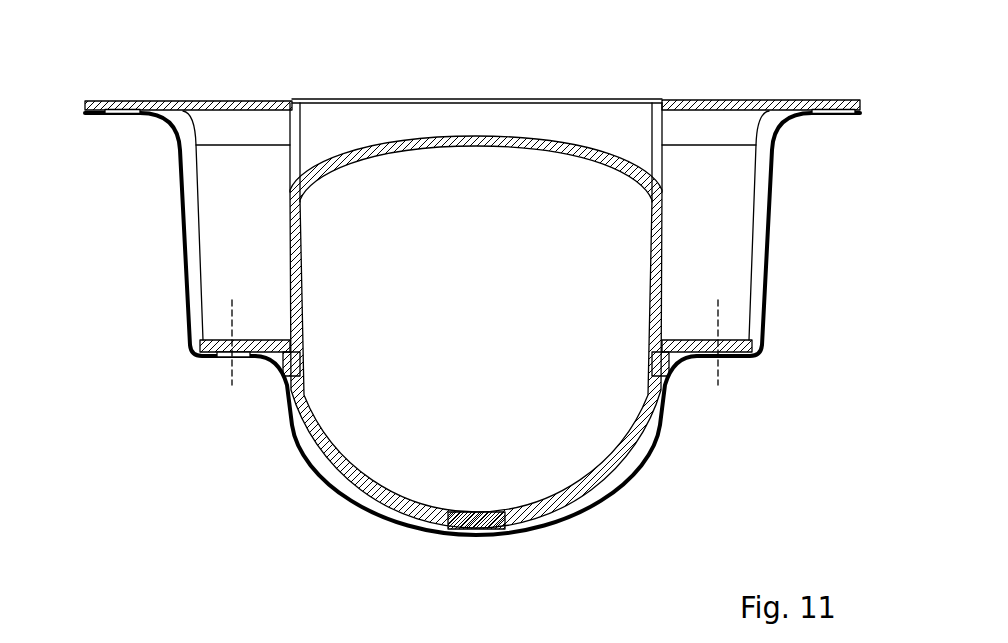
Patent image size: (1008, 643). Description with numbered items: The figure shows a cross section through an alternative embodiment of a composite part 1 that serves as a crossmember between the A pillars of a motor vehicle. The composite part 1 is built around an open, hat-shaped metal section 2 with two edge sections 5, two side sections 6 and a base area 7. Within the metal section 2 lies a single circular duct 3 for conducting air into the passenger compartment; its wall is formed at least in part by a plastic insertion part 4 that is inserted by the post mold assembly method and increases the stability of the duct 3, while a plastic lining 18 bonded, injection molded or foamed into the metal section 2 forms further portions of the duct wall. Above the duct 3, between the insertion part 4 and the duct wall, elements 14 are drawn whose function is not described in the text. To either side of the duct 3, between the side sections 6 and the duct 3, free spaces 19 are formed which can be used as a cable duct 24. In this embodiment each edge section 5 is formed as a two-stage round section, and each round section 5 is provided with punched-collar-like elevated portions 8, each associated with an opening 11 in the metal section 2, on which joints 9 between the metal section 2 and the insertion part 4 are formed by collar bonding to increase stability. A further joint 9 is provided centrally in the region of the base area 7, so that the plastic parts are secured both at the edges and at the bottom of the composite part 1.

The composite part 1 is at (685, 44).
The metal section 2 is at (469, 234).
The duct 3 is at (490, 330).
The insertion part 4 is at (218, 103).
The edge section 5 is at (88, 113).
The side section 6 is at (183, 213).
The base area 7 is at (533, 531).
The elevated portion 8 is at (104, 100).
The joint 9 is at (142, 93).
The opening 11 is at (125, 115).
The post 14 is at (298, 133).
The lining 18 is at (326, 405).
The free space 19 is at (246, 228).
The cable duct 24 is at (226, 258).